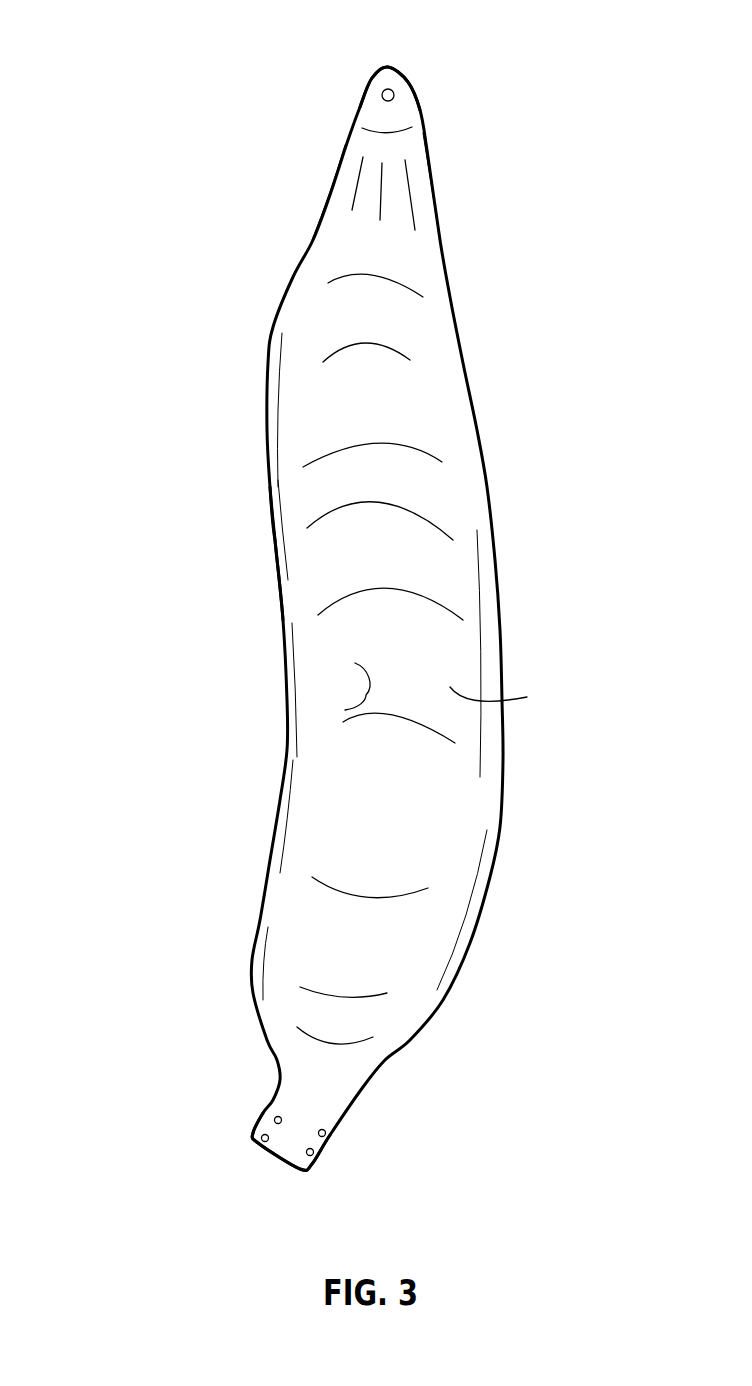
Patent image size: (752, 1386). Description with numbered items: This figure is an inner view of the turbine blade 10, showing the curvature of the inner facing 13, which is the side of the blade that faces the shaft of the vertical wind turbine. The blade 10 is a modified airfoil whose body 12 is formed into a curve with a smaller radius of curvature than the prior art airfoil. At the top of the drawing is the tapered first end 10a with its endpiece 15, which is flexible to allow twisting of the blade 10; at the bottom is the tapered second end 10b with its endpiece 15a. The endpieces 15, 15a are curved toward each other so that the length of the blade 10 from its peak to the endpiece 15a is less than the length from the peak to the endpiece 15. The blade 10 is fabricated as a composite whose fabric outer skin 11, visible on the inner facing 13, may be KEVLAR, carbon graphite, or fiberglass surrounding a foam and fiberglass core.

The turbine blade 10 is at (123, 215).
The tapered first end 10a is at (348, 68).
The tapered second end 10b is at (258, 1090).
The fabric outer skin 11 is at (275, 543).
The body 12 is at (527, 697).
The inner facing 13 is at (345, 710).
The endpiece 15 is at (400, 112).
The endpiece 15a is at (330, 1120).